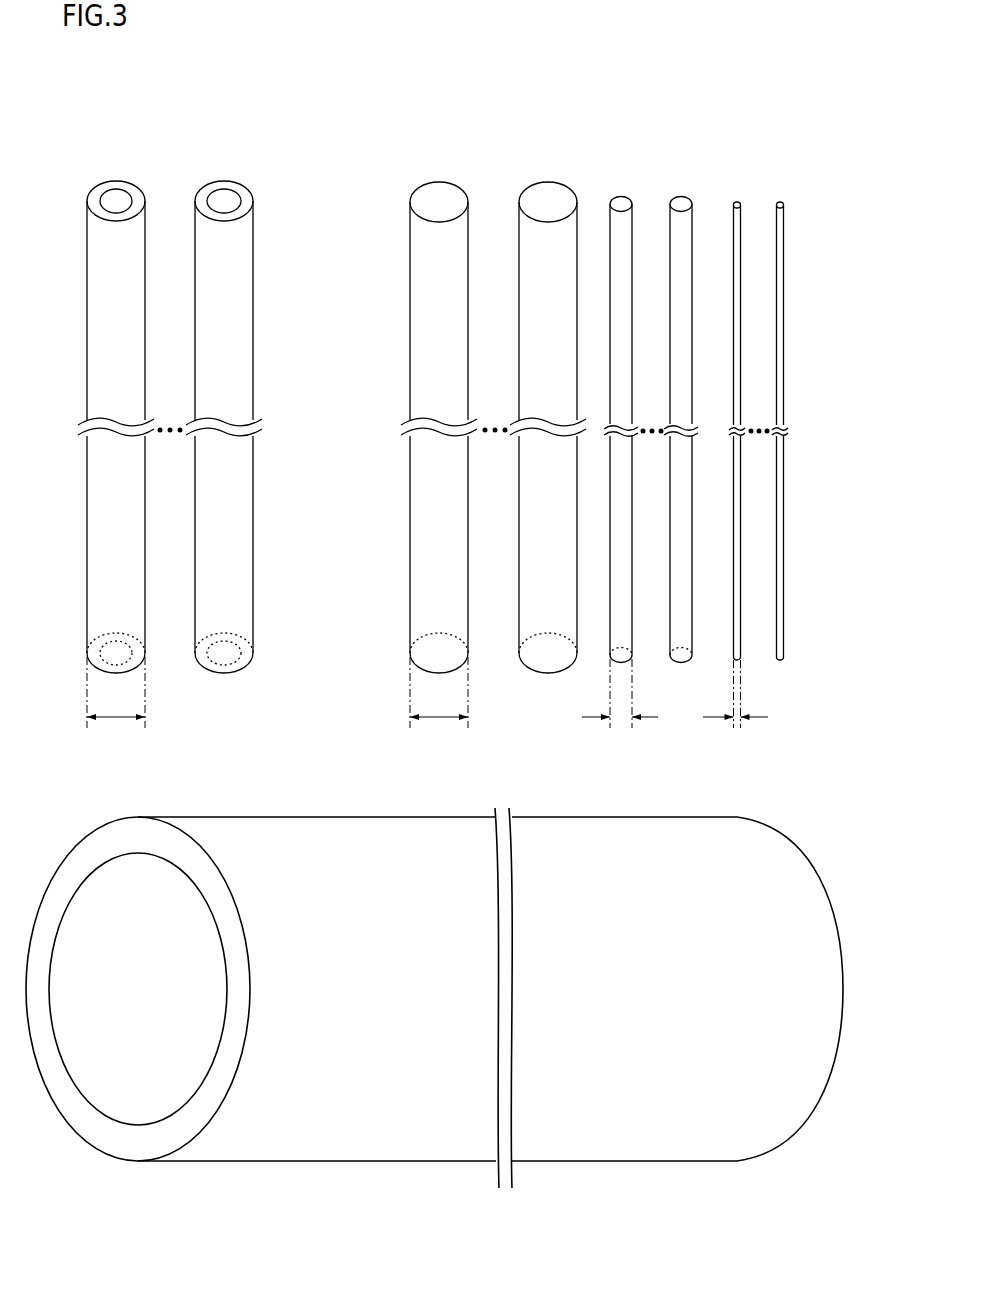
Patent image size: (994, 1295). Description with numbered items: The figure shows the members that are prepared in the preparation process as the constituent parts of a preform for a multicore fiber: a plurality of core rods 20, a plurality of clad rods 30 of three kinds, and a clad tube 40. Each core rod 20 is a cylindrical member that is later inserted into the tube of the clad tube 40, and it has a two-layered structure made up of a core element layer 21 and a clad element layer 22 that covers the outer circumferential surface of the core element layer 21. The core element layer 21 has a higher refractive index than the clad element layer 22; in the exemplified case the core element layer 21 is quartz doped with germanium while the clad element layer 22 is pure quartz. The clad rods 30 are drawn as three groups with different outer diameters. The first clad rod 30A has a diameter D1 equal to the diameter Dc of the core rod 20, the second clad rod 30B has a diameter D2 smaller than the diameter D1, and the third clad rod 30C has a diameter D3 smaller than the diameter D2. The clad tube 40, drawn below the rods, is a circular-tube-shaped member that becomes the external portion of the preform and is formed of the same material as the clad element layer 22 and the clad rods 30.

The core rod 20 is at (115, 136).
The core element layer 21 is at (116, 196).
The clad element layer 22 is at (137, 196).
The clad rod 30 is at (440, 137).
The first clad rod 30A is at (439, 198).
The second clad rod 30B is at (620, 200).
The third clad rod 30C is at (737, 201).
The clad tube 40 is at (271, 828).
The diameter of the core rod Dc is at (117, 718).
The diameter of the first clad rod D1 is at (437, 718).
The diameter of the second clad rod D2 is at (622, 718).
The diameter of the third clad rod D3 is at (737, 718).